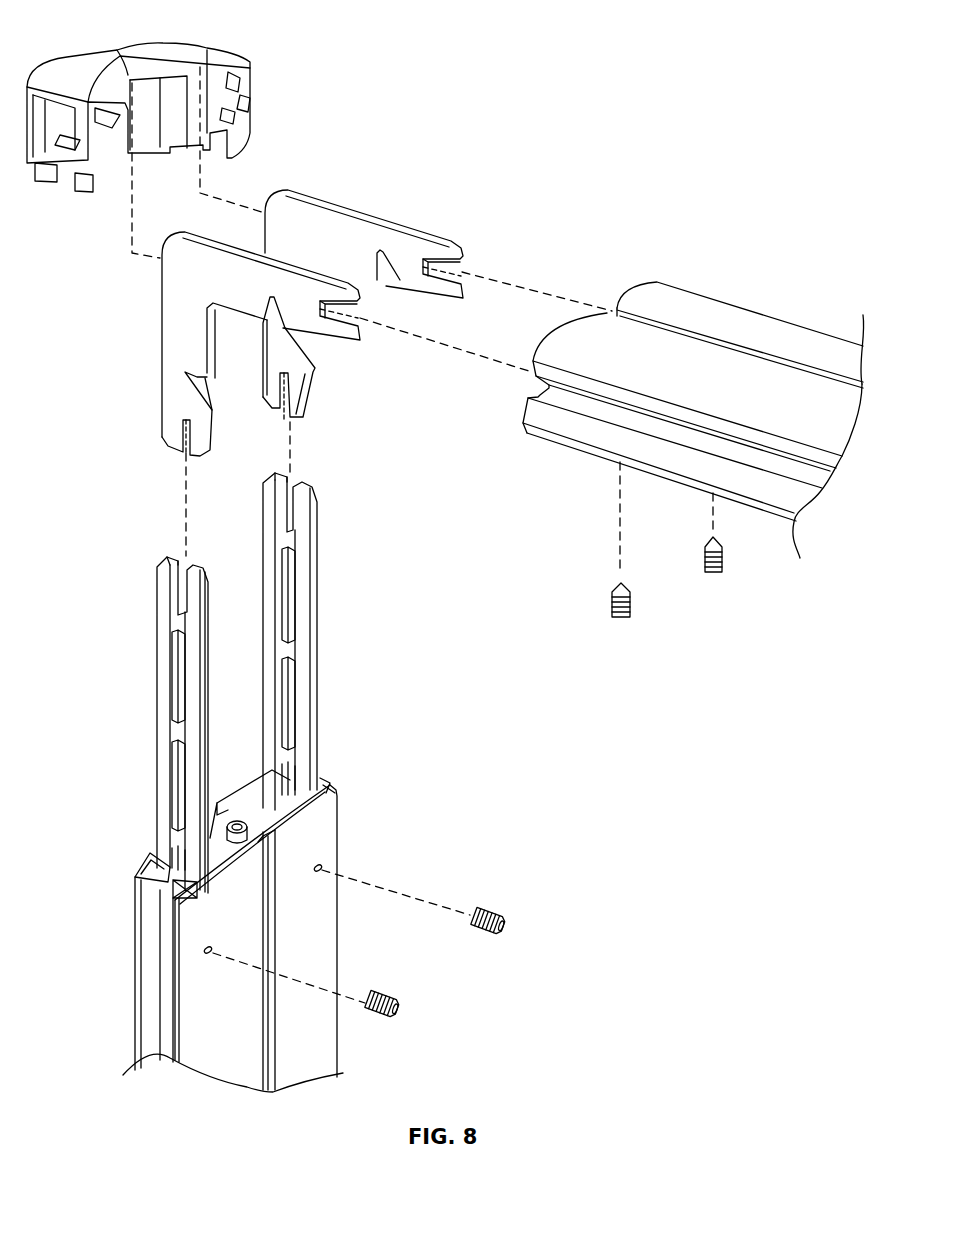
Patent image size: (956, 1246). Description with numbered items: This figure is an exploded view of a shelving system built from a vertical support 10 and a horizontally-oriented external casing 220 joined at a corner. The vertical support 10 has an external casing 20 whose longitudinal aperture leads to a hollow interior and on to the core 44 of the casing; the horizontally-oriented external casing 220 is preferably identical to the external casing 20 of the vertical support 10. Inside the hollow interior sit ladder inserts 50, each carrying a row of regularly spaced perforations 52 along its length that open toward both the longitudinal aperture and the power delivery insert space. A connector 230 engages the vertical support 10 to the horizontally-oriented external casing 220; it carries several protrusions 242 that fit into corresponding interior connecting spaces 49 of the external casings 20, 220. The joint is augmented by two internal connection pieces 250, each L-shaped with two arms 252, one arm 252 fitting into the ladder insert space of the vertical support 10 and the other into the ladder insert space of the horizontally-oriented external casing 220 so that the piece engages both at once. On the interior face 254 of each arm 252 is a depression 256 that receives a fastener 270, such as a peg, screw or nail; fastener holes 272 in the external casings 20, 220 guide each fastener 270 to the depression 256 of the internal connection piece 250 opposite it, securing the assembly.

The vertical support 10 is at (223, 1068).
The external casing 20 is at (735, 315).
The core 44 is at (237, 812).
The interior connecting space 49 is at (157, 860).
The ladder insert 50 is at (157, 600).
The perforation 52 is at (175, 668).
The horizontally-oriented external casing 220 is at (832, 428).
The connector 230 is at (77, 58).
The protrusion 242 is at (235, 150).
The internal connection piece 250 is at (366, 203).
The arm 252 is at (405, 247).
The interior face 254 is at (212, 323).
The depression 256 is at (390, 267).
The fastener 270 is at (712, 573).
The fastener hole 272 is at (320, 867).